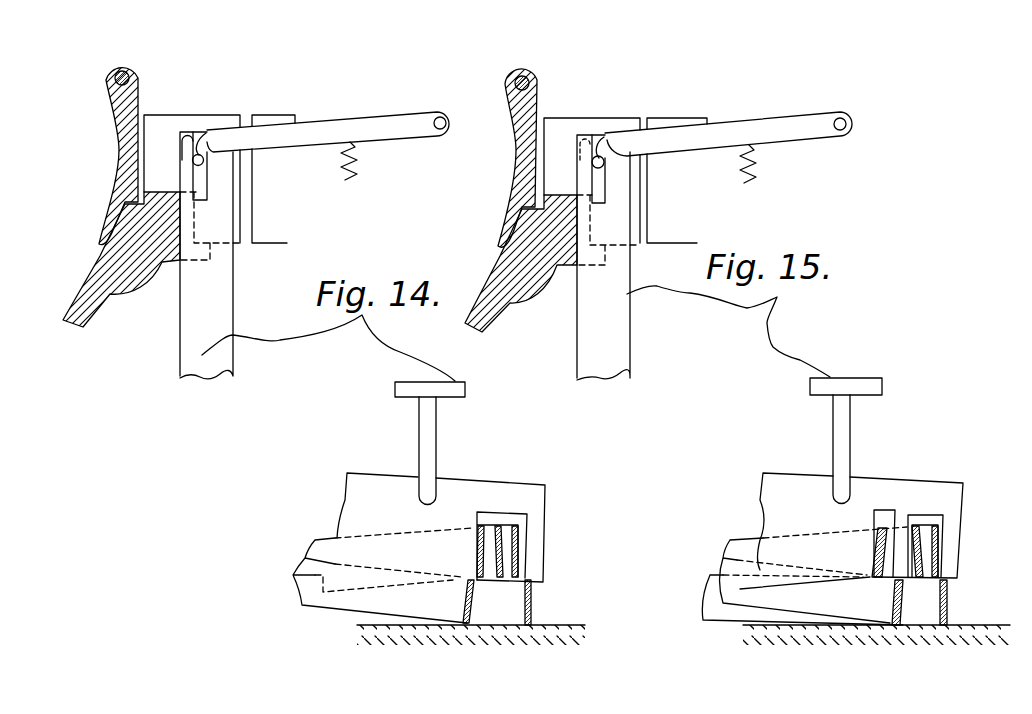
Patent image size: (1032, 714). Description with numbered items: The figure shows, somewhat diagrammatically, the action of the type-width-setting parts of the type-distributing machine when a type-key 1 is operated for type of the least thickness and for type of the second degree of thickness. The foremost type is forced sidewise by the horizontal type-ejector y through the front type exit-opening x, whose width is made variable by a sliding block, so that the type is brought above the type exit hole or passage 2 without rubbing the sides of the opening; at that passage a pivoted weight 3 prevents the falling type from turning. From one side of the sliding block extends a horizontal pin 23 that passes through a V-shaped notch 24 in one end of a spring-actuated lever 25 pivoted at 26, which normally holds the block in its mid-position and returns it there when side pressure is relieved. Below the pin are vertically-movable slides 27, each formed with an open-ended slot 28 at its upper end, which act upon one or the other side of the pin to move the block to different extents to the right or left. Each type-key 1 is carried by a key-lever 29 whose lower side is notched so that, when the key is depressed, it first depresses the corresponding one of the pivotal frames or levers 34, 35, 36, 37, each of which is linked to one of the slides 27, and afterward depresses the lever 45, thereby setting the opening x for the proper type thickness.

In FIG. 14, the type-keys 1 is at (395, 388).
In FIG. 15, the type-keys 1 is at (870, 386).
In FIG. 14, the type exit hole or passage 2 is at (130, 212).
In FIG. 15, the type exit hole or passage 2 is at (530, 214).
In FIG. 14, the pivoted weight 3 is at (113, 196).
In FIG. 15, the pivoted weight 3 is at (516, 182).
In FIG. 14, the horizontal pin 23 is at (197, 165).
In FIG. 15, the horizontal pin 23 is at (604, 164).
In FIG. 14, the V-shaped notch 24 is at (198, 152).
In FIG. 15, the V-shaped notch 24 is at (600, 148).
In FIG. 14, the spring-actuated lever 25 is at (312, 128).
In FIG. 15, the spring-actuated lever 25 is at (768, 138).
In FIG. 14, the pivot 26 is at (440, 130).
In FIG. 15, the pivot 26 is at (840, 130).
In FIG. 14, the vertically-movable slides 27 is at (218, 281).
In FIG. 15, the vertically-movable slides 27 is at (627, 294).
In FIG. 14, the open-ended slot 28 is at (204, 176).
In FIG. 15, the open-ended slot 28 is at (599, 193).
In FIG. 14, the key-levers 29 is at (439, 559).
In FIG. 15, the key-levers 29 is at (856, 559).
In FIG. 14, the pivotal frame or lever 34 is at (472, 594).
In FIG. 15, the pivotal frame or lever 34 is at (883, 554).
In FIG. 14, the pivotal frame or lever 35 is at (478, 547).
In FIG. 15, the pivotal frame or lever 35 is at (898, 597).
In FIG. 14, the pivotal frame or lever 36 is at (502, 558).
In FIG. 15, the pivotal frame or lever 36 is at (924, 559).
In FIG. 14, the pivotal frame or lever 37 is at (513, 539).
In FIG. 15, the pivotal frame or lever 37 is at (932, 536).
In FIG. 14, the lever 45 is at (532, 600).
In FIG. 15, the lever 45 is at (948, 603).
In FIG. 14, the type exit-opening x is at (140, 139).
In FIG. 15, the type exit-opening x is at (542, 150).
In FIG. 14, the type-ejector y is at (210, 120).
In FIG. 15, the type-ejector y is at (575, 125).